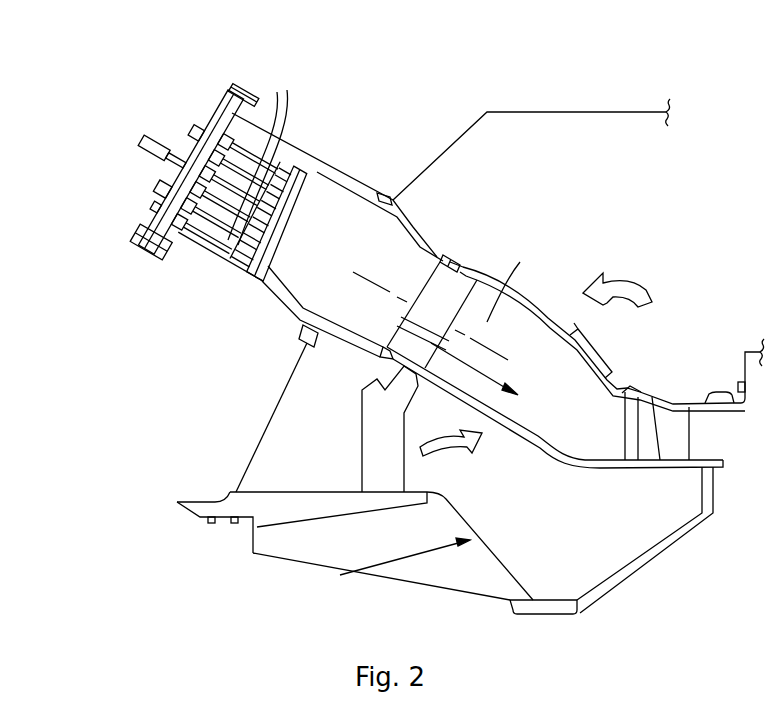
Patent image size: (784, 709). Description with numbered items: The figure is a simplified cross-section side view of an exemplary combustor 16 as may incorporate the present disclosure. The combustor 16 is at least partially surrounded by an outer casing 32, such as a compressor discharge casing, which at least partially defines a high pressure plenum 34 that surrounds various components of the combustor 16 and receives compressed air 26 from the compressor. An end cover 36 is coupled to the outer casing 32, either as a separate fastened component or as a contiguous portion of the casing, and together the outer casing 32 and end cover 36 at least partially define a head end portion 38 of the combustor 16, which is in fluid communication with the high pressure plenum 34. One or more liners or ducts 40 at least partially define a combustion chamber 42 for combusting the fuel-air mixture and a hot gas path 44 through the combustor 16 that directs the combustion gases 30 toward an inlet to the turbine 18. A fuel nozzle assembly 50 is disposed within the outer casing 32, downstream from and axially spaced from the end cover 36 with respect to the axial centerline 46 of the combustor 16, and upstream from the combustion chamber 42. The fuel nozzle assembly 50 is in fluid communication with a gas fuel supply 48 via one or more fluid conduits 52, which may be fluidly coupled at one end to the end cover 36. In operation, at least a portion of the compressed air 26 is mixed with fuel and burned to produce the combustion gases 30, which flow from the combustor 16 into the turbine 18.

The combustor 16 is at (511, 82).
The turbine 18 is at (701, 443).
The compressed air 26 is at (627, 283).
The combustion gases 30 is at (494, 376).
The outer casing 32 is at (458, 128).
The high pressure plenum 34 is at (607, 195).
The end cover 36 is at (137, 218).
The head end portion 38 is at (212, 268).
The liners or ducts 40 is at (407, 220).
The combustion chamber 42 is at (319, 260).
The hot gas path 44 is at (520, 262).
The axial centerline 46 is at (390, 292).
The gas fuel supply 48 is at (142, 137).
The fuel nozzle assembly 50 is at (274, 163).
The fluid conduits 52 is at (170, 260).